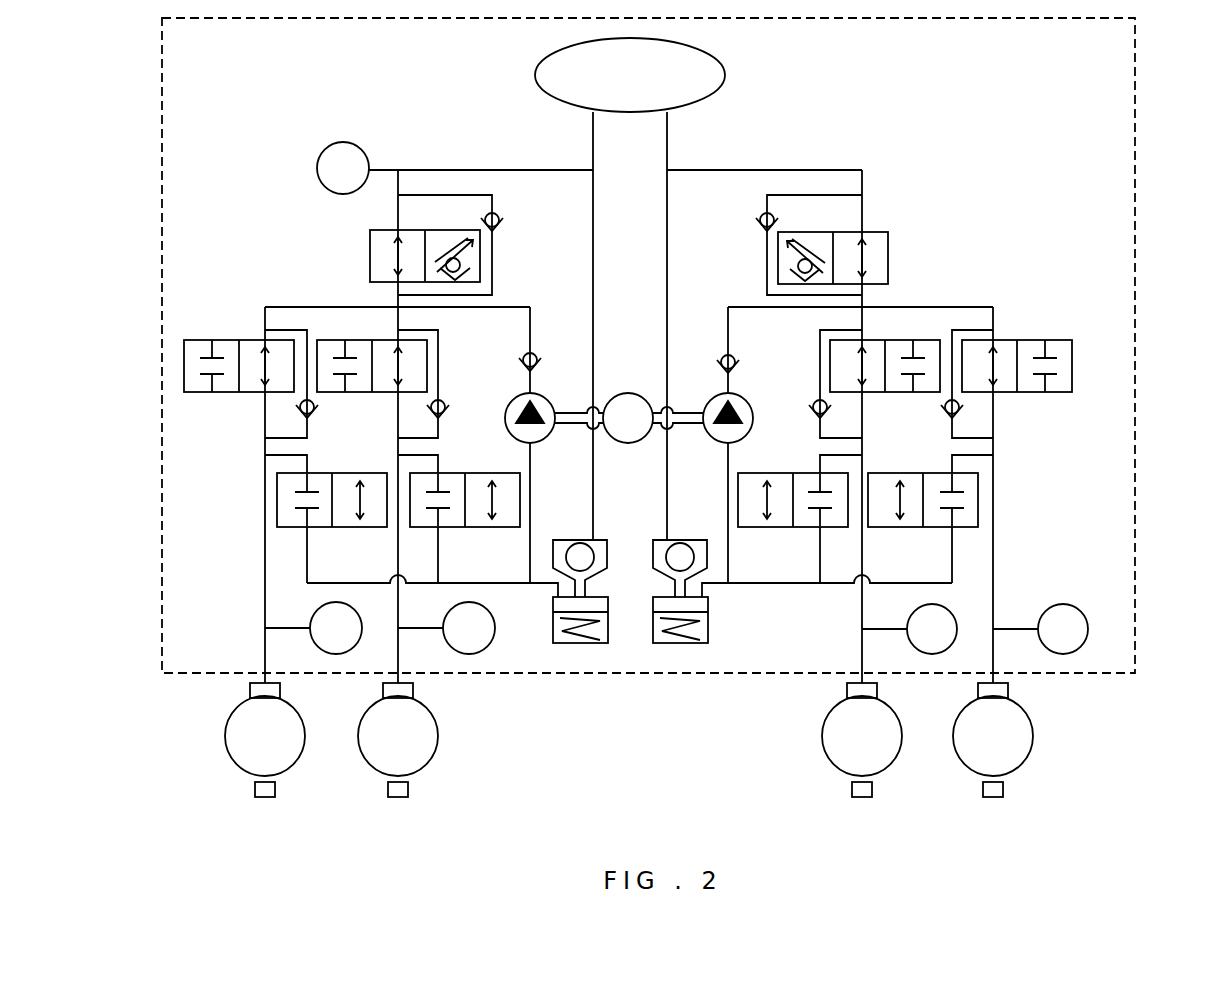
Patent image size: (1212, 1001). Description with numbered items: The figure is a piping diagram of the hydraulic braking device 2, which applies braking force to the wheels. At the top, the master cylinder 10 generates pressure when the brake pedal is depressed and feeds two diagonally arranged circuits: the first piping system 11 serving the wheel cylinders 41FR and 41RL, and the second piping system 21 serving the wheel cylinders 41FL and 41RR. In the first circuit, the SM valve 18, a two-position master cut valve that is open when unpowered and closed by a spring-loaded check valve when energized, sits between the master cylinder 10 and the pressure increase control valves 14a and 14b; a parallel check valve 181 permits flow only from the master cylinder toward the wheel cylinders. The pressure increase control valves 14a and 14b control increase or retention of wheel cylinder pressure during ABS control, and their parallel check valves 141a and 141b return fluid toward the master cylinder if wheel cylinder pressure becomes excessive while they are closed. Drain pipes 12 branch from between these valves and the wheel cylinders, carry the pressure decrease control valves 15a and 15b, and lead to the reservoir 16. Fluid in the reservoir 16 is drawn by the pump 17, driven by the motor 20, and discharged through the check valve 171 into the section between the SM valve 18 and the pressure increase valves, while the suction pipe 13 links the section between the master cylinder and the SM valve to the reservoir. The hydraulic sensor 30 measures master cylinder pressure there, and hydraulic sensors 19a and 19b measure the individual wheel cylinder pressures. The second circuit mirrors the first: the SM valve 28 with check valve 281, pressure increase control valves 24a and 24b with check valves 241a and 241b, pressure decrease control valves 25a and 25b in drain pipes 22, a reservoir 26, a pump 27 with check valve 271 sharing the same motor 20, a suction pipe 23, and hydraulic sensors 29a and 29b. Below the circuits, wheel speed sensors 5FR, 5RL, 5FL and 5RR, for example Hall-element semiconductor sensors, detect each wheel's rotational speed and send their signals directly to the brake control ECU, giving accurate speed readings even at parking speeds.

The hydraulic braking device 2 is at (1135, 75).
The master cylinder 10 is at (725, 75).
The first piping system 11 is at (593, 143).
The second piping system 21 is at (667, 143).
The suction pipe 13 is at (593, 290).
The suction pipe 23 is at (667, 290).
The hydraulic sensor 30 is at (343, 142).
The master cut valve (SM valve) 18 is at (370, 252).
The check valve 181 is at (500, 220).
The SM valve 28 is at (888, 253).
The check valve 281 is at (758, 220).
The pressure increase control valve 14a is at (228, 340).
The pressure increase control valve 14b is at (355, 340).
The check valve 141a is at (298, 412).
The check valve 141b is at (447, 407).
The pressure decrease control valve 15a is at (347, 470).
The pressure decrease control valve 15b is at (477, 470).
The drain pipe 12 is at (347, 580).
The drain pipe 22 is at (775, 580).
The reservoir 16 is at (552, 624).
The reservoir 26 is at (708, 625).
The pump 17 is at (548, 440).
The pump 27 is at (712, 440).
The check valve 171 is at (522, 355).
The check valve 271 is at (736, 355).
The motor 20 is at (628, 445).
The pressure increase control valve 24a is at (905, 340).
The pressure increase control valve 24b is at (1050, 340).
The check valve 241a is at (812, 407).
The check valve 241b is at (962, 412).
The pressure decrease control valve 25a is at (780, 470).
The pressure decrease control valve 25b is at (910, 470).
The hydraulic sensor 19a is at (310, 625).
The hydraulic sensor 19b is at (443, 625).
The hydraulic sensor 29a is at (958, 612).
The hydraulic sensor 29b is at (1065, 604).
The wheel cylinder 41FR is at (250, 690).
The wheel cylinder 41RL is at (413, 690).
The wheel cylinder 41FL is at (847, 690).
The wheel cylinder 41RR is at (1008, 690).
The wheel speed sensor 5FR is at (255, 790).
The wheel speed sensor 5RL is at (408, 790).
The wheel speed sensor 5FL is at (852, 790).
The wheel speed sensor 5RR is at (1003, 790).